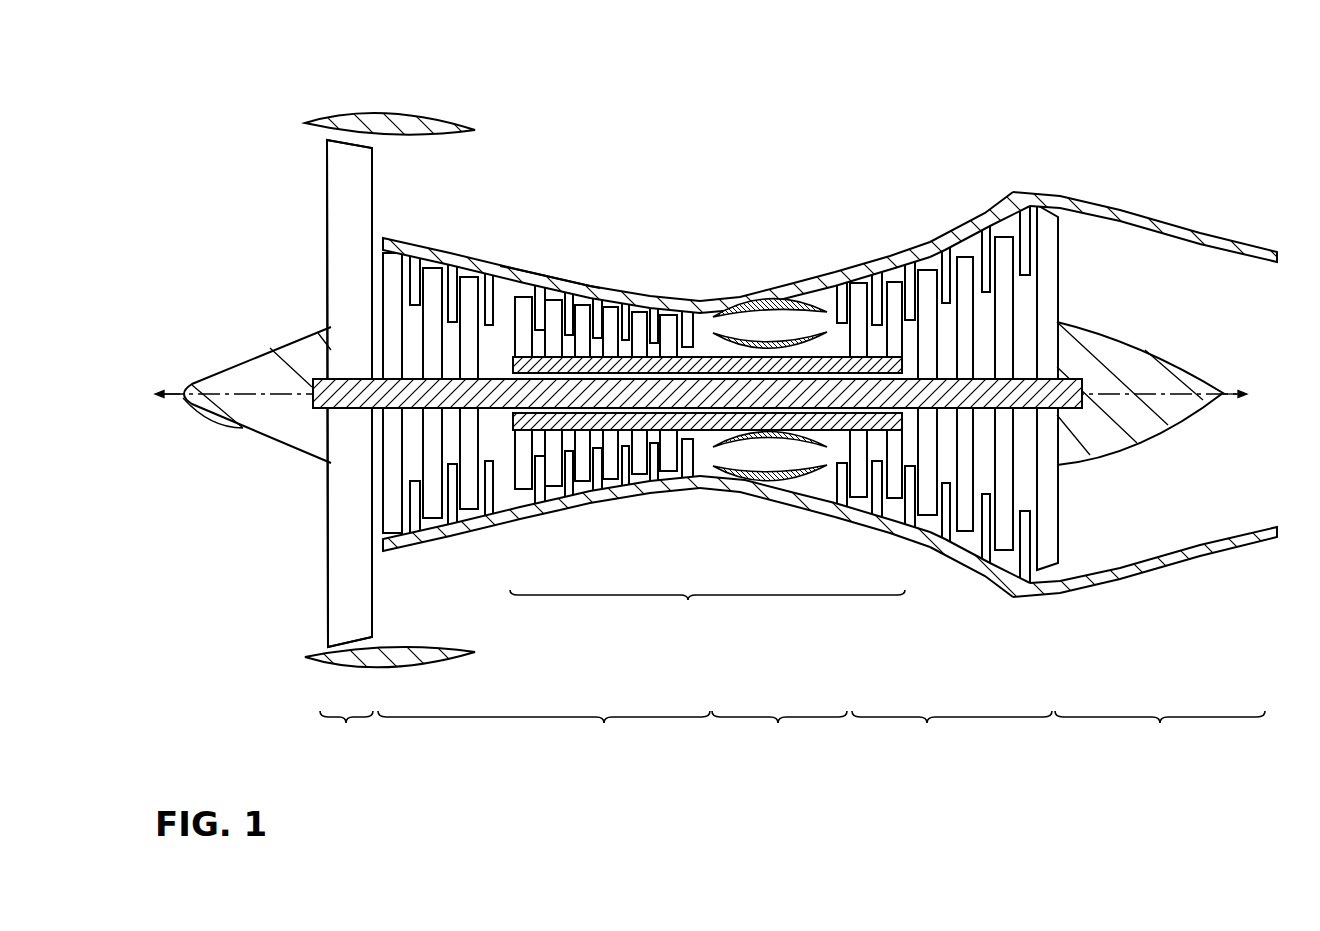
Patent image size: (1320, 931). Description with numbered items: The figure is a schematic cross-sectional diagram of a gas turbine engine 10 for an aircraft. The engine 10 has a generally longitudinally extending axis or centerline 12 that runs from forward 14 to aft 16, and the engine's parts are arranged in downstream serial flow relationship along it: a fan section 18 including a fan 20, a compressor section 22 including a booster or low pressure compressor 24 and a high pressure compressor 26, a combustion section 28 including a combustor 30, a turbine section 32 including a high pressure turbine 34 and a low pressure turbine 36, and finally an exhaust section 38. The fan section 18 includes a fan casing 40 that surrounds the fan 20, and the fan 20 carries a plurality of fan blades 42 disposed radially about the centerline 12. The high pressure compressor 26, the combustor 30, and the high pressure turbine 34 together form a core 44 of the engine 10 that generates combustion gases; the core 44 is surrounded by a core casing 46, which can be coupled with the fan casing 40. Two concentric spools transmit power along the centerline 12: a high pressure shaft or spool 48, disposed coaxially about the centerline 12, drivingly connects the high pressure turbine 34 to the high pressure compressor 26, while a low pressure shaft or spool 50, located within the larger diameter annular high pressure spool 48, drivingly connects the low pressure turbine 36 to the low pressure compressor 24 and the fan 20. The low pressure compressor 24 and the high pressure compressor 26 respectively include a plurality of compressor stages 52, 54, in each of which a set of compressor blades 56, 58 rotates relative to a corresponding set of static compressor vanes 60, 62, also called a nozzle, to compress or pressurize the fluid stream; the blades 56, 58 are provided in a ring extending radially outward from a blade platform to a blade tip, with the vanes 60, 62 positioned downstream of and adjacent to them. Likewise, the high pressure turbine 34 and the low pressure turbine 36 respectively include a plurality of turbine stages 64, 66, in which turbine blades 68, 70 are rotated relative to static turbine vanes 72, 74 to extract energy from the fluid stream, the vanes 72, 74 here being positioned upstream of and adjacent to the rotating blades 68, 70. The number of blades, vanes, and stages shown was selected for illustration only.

The gas turbine engine 10 is at (204, 47).
The centerline 12 is at (237, 393).
The forward 14 is at (154, 394).
The aft 16 is at (1252, 394).
The fan section 18 is at (346, 731).
The fan 20 is at (320, 197).
The compressor section 22 is at (544, 731).
The low pressure compressor 24 is at (506, 533).
The high pressure compressor 26 is at (649, 509).
The combustion section 28 is at (779, 731).
The combustor 30 is at (818, 294).
The turbine section 32 is at (952, 731).
The high pressure turbine 34 is at (836, 534).
The low pressure turbine 36 is at (954, 569).
The exhaust section 38 is at (1145, 472).
The fan casing 40 is at (395, 112).
The fan blades 42 is at (340, 593).
The core 44 is at (707, 551).
The core casing 46 is at (752, 290).
The HP shaft or spool 48 is at (707, 357).
The LP shaft or spool 50 is at (494, 385).
The compressor stages 52 is at (381, 221).
The compressor stages 54 is at (523, 264).
The compressor blades 56 is at (395, 260).
The compressor blades 58 is at (531, 308).
The static compressor vanes 60 is at (414, 268).
The static compressor vanes 62 is at (542, 307).
The turbine stages 64 is at (859, 250).
The turbine stages 66 is at (978, 198).
The turbine blades 68 is at (893, 297).
The turbine blades 70 is at (1005, 252).
The static turbine vanes 72 is at (876, 290).
The static turbine vanes 74 is at (988, 290).